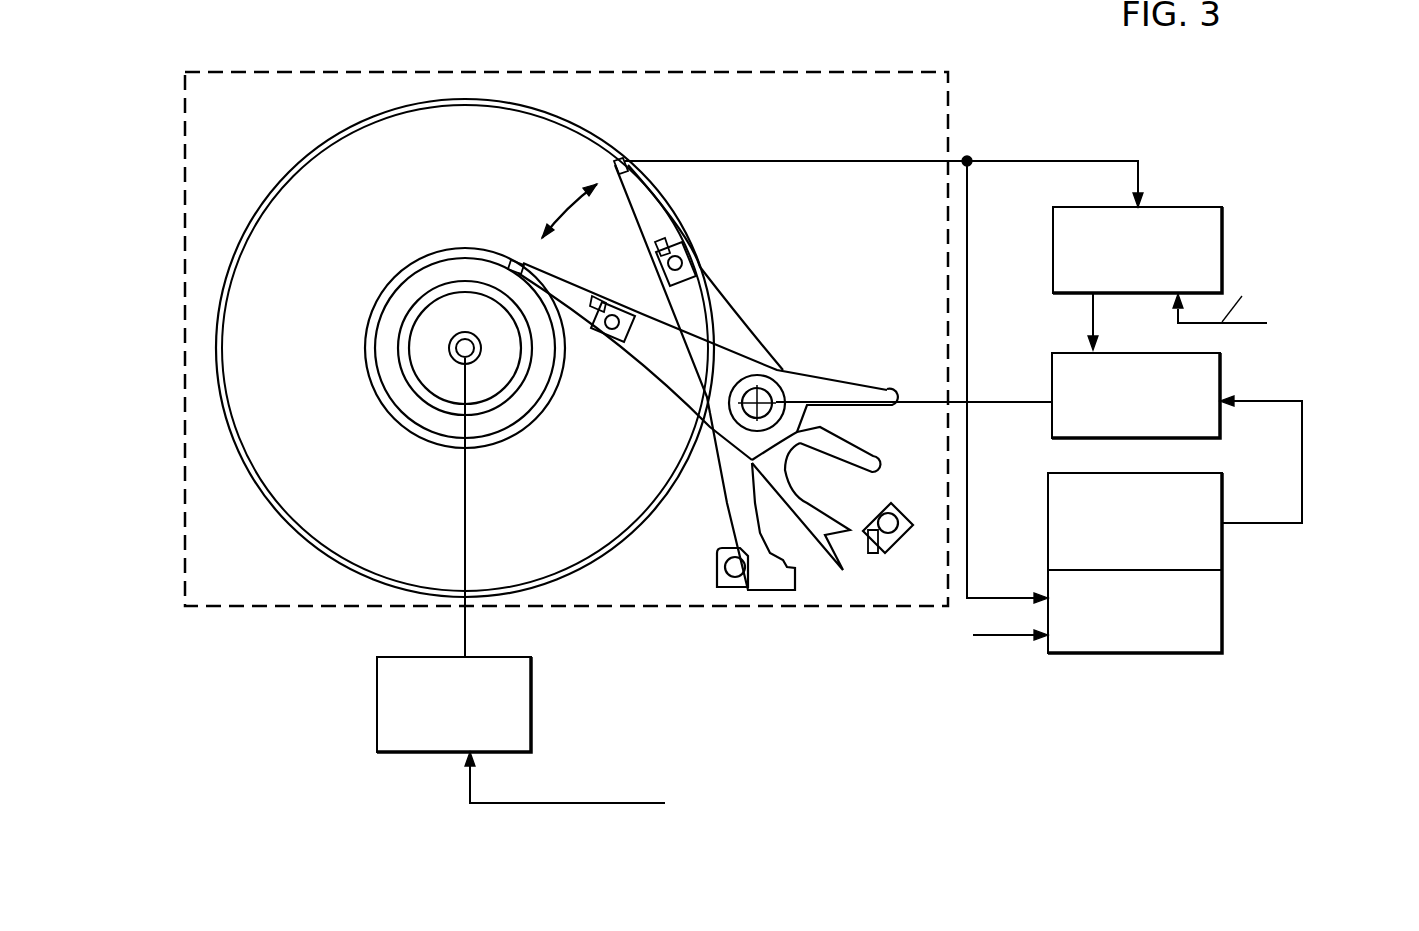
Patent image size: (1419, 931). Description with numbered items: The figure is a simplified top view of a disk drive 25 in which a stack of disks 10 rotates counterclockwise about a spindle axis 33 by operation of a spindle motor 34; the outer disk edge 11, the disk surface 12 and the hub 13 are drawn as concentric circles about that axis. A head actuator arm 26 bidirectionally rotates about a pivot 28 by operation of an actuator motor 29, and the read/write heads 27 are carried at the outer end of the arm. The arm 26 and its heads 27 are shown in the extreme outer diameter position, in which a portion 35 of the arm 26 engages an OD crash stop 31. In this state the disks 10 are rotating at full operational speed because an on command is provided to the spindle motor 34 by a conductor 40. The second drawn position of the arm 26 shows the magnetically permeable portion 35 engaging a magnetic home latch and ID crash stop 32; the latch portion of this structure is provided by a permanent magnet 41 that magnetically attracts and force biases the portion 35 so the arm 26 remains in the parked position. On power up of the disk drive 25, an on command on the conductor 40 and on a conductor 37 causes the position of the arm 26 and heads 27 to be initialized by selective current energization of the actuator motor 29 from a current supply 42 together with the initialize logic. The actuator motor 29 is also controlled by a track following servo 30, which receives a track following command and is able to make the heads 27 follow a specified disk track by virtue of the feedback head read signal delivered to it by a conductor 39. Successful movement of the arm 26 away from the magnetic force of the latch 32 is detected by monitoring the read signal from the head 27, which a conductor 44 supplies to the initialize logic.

The disks 10 is at (288, 145).
The magnetic disk 11 is at (252, 227).
The disk data surface 12 is at (346, 217).
The spindle hub 13 is at (533, 417).
The disk drive 25 is at (382, 70).
The head actuator arm 26 is at (705, 293).
The heads 27 is at (630, 163).
The pivot 28 is at (768, 400).
The actuator motor 29 is at (1222, 375).
The track following servo 30 is at (1167, 205).
The OD crash stop 31 is at (728, 585).
The magnetic home latch and ID crash stop 32 is at (910, 538).
The spindle axis 33 is at (455, 347).
The spindle motor 34 is at (375, 692).
The magnetically permeable portion of arm 35 is at (743, 505).
The conductor 37 is at (1229, 399).
The conductor 39 is at (1015, 158).
The conductor 40 is at (583, 802).
The permanent magnet 41 is at (868, 552).
The current supply 42 is at (1222, 497).
The conductor 44 is at (968, 268).